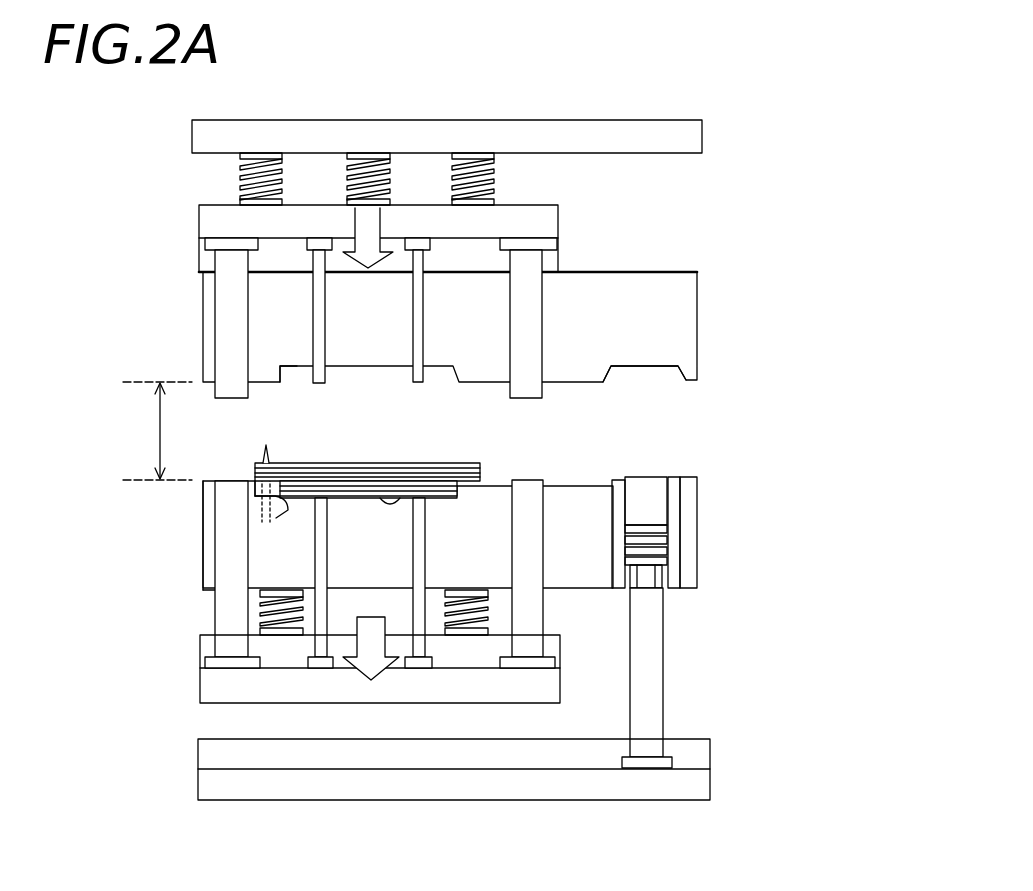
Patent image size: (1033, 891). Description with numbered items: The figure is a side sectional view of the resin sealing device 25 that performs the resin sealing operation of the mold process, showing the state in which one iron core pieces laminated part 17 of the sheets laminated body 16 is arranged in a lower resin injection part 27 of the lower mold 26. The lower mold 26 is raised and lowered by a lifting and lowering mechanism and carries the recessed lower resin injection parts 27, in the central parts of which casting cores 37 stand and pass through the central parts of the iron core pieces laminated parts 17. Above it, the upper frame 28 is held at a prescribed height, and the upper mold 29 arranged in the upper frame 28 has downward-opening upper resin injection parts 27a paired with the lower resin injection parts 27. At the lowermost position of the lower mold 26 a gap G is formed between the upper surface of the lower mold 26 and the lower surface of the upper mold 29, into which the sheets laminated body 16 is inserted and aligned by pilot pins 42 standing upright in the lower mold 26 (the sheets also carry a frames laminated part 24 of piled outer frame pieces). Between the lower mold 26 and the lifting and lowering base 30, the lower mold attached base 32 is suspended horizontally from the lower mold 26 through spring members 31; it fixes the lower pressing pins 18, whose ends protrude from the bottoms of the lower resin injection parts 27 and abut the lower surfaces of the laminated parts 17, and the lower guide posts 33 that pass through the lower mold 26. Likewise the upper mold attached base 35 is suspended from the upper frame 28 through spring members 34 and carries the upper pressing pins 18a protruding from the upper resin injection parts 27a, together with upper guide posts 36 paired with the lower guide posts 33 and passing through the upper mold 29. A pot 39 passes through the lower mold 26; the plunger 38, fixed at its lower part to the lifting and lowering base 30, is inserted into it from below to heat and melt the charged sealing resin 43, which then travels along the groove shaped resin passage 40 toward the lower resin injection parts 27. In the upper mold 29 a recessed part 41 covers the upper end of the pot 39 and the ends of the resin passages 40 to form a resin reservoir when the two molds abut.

The sheets laminated body 16 is at (457, 622).
The iron core pieces laminated part 17 is at (360, 462).
The lower pressing pin 18 is at (322, 550).
The upper pressing pin 18a is at (418, 310).
The frames laminated part 24 is at (285, 460).
The resin sealing device 25 is at (469, 235).
The lower mold 26 is at (700, 505).
The lower resin injection part 27 is at (273, 510).
The upper resin injection part 27a is at (295, 365).
The upper frame 28 is at (616, 135).
The upper mold 29 is at (700, 298).
The lifting and lowering base 30 is at (712, 755).
The spring member 31 is at (282, 620).
The lower mold attached base 32 is at (197, 692).
The lower guide post 33 is at (233, 643).
The spring member 34 is at (265, 160).
The upper mold attached base 35 is at (563, 218).
The upper guide post 36 is at (527, 312).
The casting core 37 is at (400, 500).
The plunger 38 is at (645, 663).
The pot 39 is at (675, 548).
The resin passage 40 is at (583, 485).
The recessed part 41 is at (650, 368).
The pilot pin 42 is at (258, 465).
The sealing resin 43 is at (645, 492).
The gap G is at (157, 431).